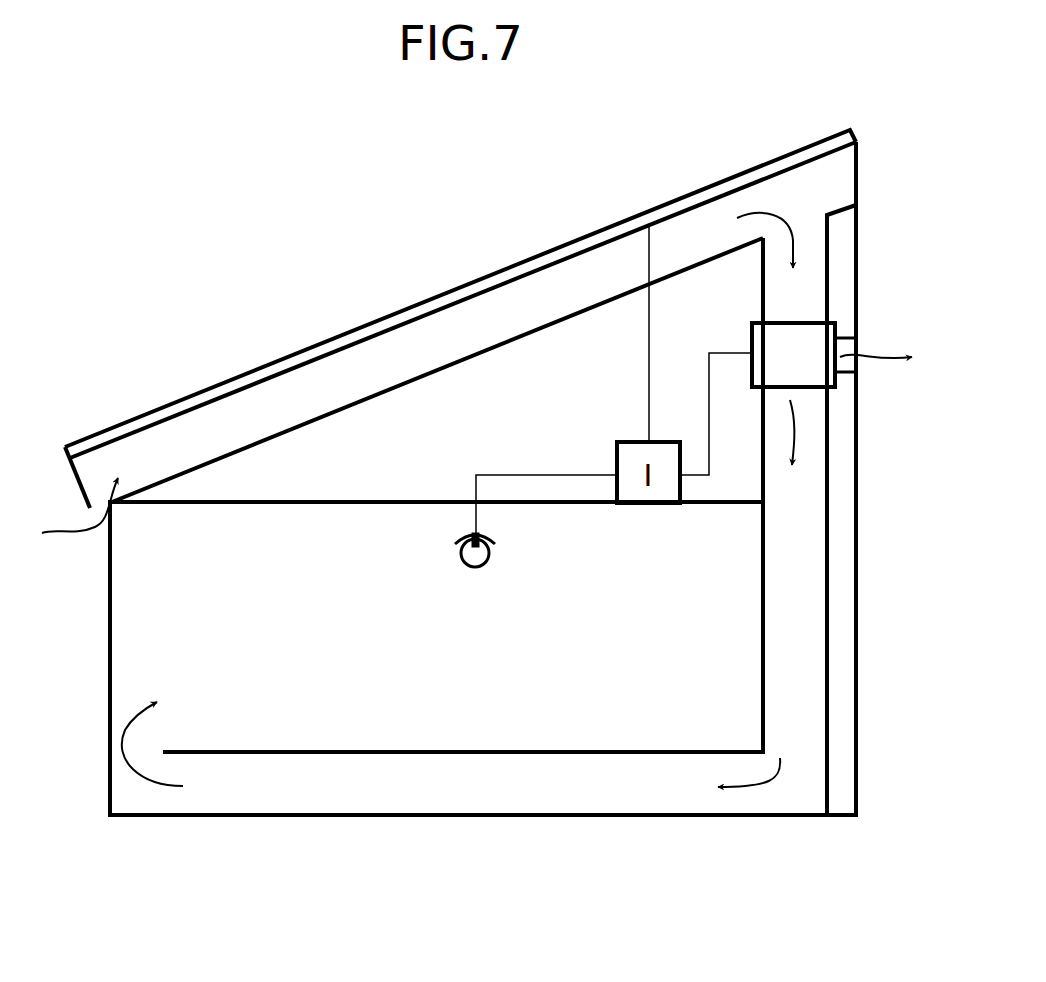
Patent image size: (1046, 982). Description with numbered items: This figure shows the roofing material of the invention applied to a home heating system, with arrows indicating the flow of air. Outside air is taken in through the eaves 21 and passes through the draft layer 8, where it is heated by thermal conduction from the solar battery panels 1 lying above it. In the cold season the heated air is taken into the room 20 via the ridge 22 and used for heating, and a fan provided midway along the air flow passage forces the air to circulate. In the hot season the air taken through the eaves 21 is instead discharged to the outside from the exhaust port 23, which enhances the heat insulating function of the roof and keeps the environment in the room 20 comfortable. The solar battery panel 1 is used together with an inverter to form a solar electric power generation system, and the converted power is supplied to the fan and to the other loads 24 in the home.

The solar battery panel 1 is at (428, 298).
The draft layer 8 is at (532, 305).
The room 20 is at (470, 725).
The eaves 21 is at (96, 466).
The ridge 22 is at (843, 176).
The exhaust port 23 is at (842, 343).
The other loads 24 is at (492, 553).